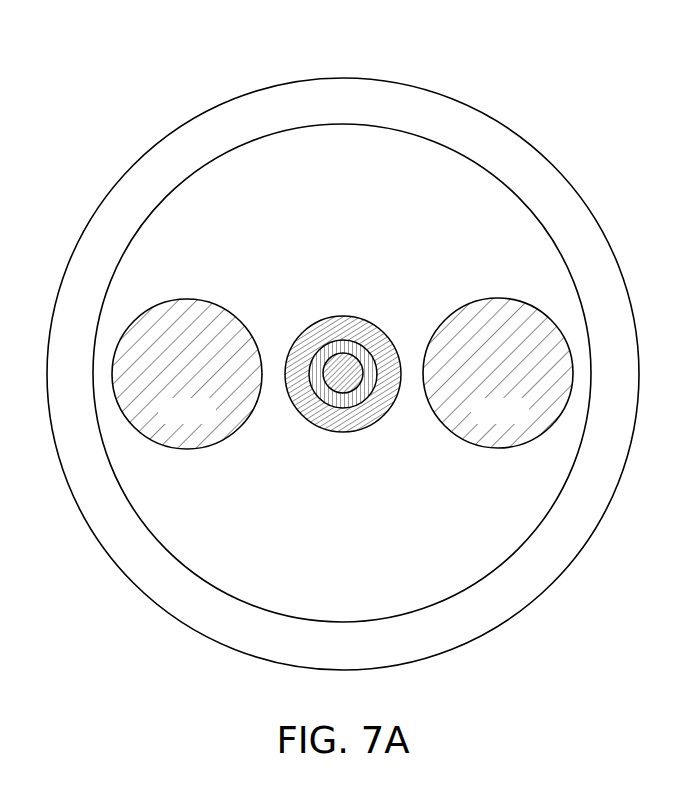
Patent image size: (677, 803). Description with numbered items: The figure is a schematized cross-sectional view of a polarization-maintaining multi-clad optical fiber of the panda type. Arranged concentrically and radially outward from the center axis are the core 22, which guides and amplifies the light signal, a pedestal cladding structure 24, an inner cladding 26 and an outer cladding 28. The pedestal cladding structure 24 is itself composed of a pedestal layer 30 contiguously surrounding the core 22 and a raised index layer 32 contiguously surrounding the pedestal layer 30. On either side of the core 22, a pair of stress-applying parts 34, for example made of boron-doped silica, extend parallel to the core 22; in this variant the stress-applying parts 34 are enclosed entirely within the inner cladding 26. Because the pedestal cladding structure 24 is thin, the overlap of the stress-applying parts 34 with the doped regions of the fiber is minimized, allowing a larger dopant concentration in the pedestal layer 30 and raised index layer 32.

The core 22 is at (345, 370).
The pedestal cladding structure 24 is at (395, 228).
The inner cladding 26 is at (482, 528).
The outer cladding 28 is at (575, 523).
The pedestal layer 30 is at (330, 348).
The raised index layer 32 is at (380, 343).
The stress-applying parts 34 is at (452, 397).